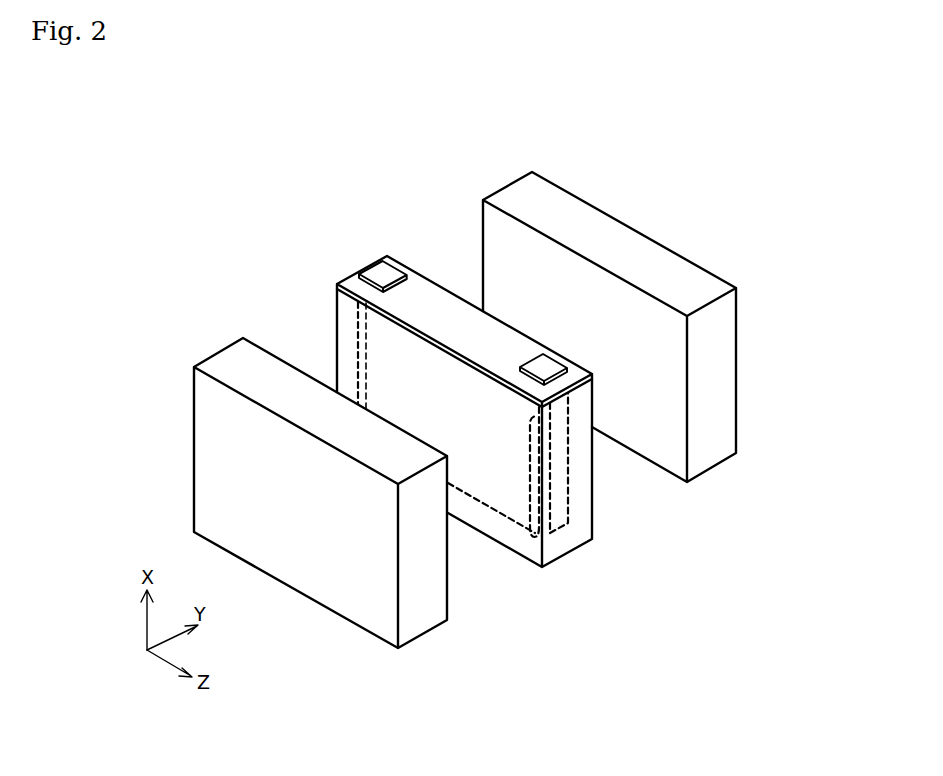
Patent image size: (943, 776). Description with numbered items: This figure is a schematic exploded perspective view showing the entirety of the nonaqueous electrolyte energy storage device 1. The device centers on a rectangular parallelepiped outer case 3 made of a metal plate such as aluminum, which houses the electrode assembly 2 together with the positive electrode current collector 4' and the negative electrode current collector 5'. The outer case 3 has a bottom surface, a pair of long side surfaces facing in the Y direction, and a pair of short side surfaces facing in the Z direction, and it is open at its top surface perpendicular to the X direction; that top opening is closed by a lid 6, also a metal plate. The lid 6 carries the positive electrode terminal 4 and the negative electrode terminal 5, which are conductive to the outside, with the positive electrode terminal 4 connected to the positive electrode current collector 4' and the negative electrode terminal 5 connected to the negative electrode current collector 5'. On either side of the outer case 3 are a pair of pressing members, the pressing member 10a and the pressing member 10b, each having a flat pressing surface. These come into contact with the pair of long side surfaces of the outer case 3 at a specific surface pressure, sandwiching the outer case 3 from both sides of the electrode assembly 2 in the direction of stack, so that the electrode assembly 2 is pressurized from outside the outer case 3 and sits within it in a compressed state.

The nonaqueous electrolyte energy storage device 1 is at (618, 158).
The electrode assembly 2 is at (375, 350).
The outer case 3 is at (338, 368).
The positive electrode terminal 4 is at (369, 233).
The positive electrode current collector 4' is at (304, 353).
The negative electrode terminal 5 is at (619, 449).
The negative electrode current collector 5' is at (598, 491).
The lid 6 is at (463, 313).
The pressing member 10a is at (440, 584).
The pressing member 10b is at (728, 405).